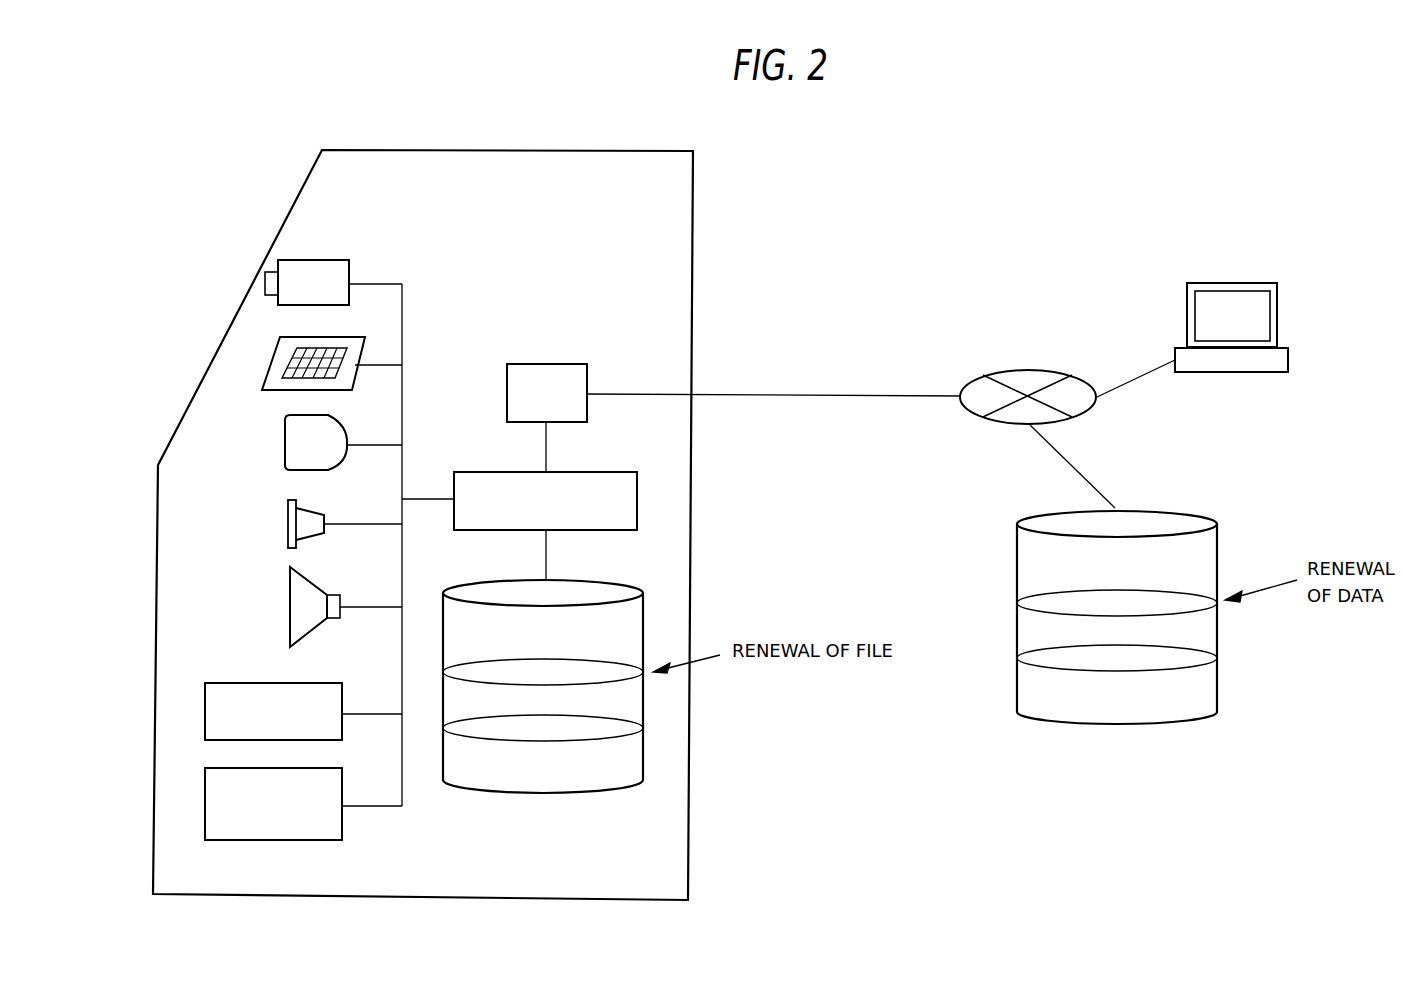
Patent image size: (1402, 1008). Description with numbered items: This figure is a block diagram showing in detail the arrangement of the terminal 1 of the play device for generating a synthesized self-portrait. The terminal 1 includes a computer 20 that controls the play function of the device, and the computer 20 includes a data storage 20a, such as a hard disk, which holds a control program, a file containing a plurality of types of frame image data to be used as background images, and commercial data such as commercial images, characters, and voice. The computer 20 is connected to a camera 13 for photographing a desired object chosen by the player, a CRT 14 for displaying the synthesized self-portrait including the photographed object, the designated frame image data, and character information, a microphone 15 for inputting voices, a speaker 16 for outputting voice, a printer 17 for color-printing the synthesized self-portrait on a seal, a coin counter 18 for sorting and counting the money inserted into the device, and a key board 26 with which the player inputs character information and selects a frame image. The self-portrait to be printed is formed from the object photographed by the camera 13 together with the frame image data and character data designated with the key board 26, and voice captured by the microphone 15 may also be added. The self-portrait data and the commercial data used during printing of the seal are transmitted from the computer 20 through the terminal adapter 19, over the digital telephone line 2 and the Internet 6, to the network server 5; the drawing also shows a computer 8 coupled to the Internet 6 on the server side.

The terminal 1 is at (693, 190).
The digital telephone line 2 is at (733, 393).
The network server 5 is at (1217, 543).
The Internet 6 is at (1040, 316).
The server computer 8 is at (1192, 374).
The camera 13 is at (321, 261).
The CRT 14 is at (284, 447).
The microphone 15 is at (287, 525).
The speaker 16 is at (289, 608).
The printer 17 is at (237, 683).
The coin counter 18 is at (270, 843).
The terminal adapter 19 is at (545, 363).
The computer 20 is at (619, 472).
The data storage 20a is at (571, 785).
The key board 26 is at (265, 375).